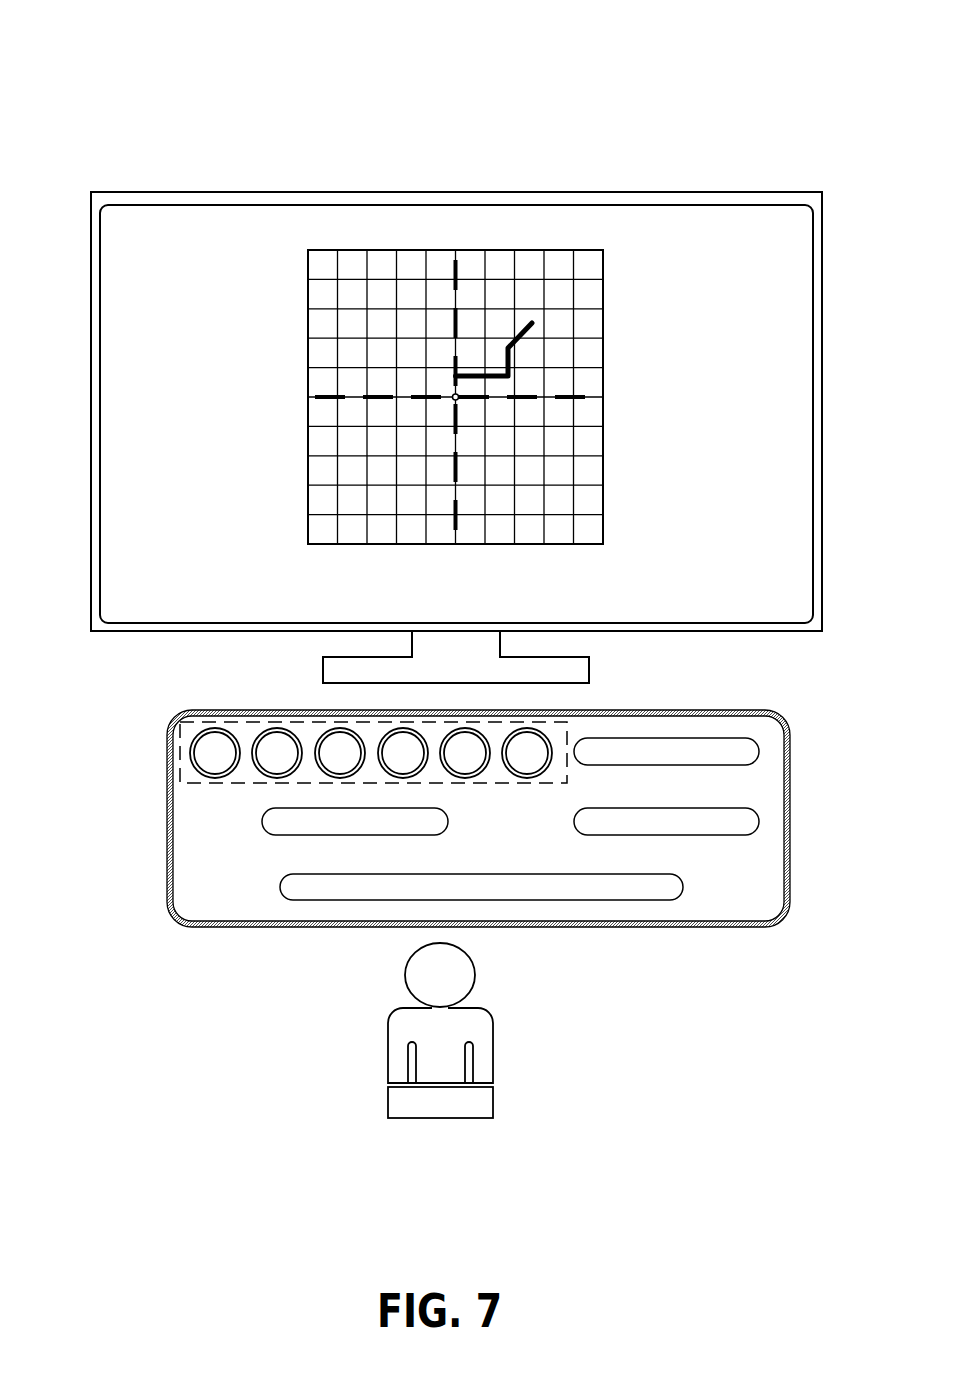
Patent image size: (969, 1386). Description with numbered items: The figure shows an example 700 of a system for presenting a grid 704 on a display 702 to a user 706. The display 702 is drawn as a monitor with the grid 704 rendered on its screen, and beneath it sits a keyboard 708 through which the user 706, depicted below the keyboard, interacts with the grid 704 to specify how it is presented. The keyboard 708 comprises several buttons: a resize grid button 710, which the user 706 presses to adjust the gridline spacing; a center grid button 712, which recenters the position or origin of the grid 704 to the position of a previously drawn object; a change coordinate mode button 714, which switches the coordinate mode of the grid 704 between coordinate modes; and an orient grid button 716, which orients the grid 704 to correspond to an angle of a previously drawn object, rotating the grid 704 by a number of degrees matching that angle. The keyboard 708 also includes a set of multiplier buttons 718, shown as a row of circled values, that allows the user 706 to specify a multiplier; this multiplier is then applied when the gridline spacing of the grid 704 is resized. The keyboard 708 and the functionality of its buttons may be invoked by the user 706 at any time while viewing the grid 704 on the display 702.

The example system 700 is at (142, 62).
The display 702 is at (455, 192).
The grid 704 is at (455, 250).
The user 706 is at (415, 1119).
The keyboard 708 is at (218, 878).
The resize grid button 710 is at (759, 745).
The center grid button 712 is at (759, 815).
The change coordinate mode button 714 is at (683, 882).
The orient grid button 716 is at (262, 821).
The set of multiplier buttons 718 is at (330, 724).